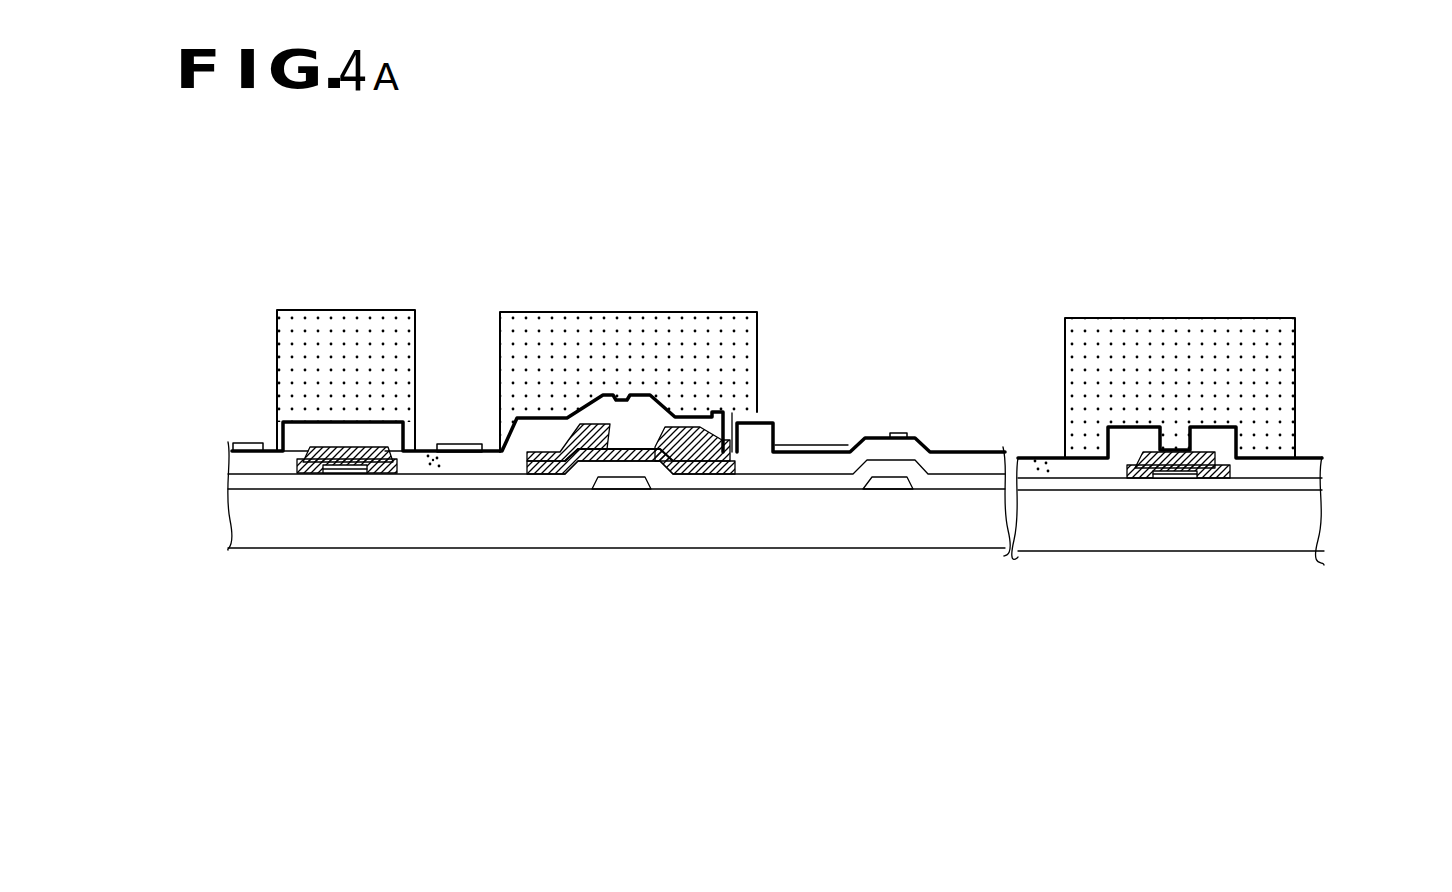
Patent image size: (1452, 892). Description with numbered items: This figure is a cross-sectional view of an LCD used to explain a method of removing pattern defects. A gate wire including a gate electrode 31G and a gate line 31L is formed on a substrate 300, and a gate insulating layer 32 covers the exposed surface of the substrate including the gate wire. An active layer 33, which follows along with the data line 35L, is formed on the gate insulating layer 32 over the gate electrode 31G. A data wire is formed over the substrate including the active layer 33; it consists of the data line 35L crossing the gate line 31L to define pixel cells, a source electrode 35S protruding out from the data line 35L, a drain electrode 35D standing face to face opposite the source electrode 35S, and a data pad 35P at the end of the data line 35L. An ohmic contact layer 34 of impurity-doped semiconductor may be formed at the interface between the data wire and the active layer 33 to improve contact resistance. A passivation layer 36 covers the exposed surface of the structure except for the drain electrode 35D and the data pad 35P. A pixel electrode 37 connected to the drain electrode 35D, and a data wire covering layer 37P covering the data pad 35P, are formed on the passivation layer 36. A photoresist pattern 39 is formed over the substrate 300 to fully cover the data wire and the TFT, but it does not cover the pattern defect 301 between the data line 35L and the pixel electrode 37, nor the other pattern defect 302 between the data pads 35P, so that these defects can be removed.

The substrate 300 is at (1322, 537).
The pattern defect 301 is at (436, 466).
The pattern defect 302 is at (1040, 474).
The gate electrode 31G is at (620, 489).
The gate line 31L is at (888, 486).
The gate insulating layer 32 is at (258, 477).
The active layer 33 is at (341, 473).
The ohmic contact layer 34 is at (362, 474).
The data line 35L is at (306, 462).
The source electrode 35S is at (567, 447).
The drain electrode 35D is at (732, 471).
The data pad 35P is at (1213, 469).
The passivation layer 36 is at (247, 461).
The pixel electrode 37 is at (243, 442).
The data wire covering layer 37P is at (1248, 458).
The photoresist pattern 39 is at (343, 318).